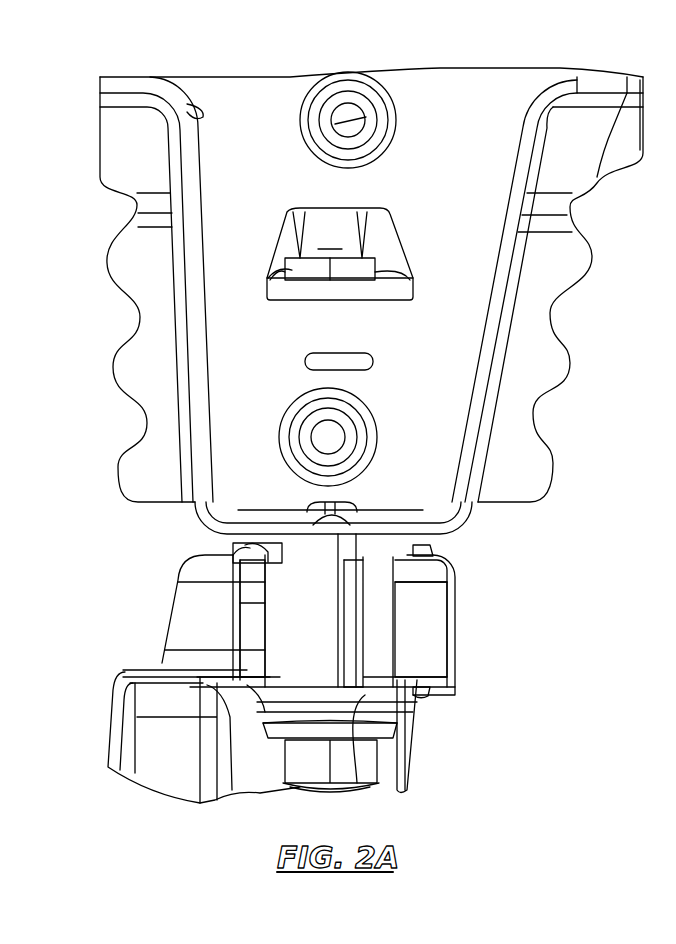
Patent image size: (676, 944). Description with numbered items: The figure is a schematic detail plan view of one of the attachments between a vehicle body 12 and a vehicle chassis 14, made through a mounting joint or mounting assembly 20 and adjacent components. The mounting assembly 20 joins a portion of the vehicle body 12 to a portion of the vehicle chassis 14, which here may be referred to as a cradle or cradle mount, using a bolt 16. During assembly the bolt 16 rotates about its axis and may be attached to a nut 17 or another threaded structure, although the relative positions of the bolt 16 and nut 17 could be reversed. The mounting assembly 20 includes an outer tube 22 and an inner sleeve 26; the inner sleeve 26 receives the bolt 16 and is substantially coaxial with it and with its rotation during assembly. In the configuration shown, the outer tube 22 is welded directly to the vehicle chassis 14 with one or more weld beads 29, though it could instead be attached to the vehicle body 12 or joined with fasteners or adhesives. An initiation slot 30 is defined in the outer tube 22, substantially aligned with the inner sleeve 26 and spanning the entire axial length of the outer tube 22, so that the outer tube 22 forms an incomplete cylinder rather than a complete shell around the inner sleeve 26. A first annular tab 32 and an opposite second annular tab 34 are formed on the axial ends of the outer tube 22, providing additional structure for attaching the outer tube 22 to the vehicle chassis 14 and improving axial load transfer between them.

The vehicle body 12 is at (442, 437).
The vehicle chassis 14 is at (455, 660).
The bolt 16 is at (303, 773).
The nut 17 is at (283, 270).
The mounting assembly 20 is at (507, 590).
The outer tube 22 is at (273, 635).
The inner sleeve 26 is at (350, 612).
The weld beads 29 is at (250, 558).
The initiation slot 30 is at (343, 572).
The first annular tab 32 is at (248, 712).
The second annular tab 34 is at (257, 541).